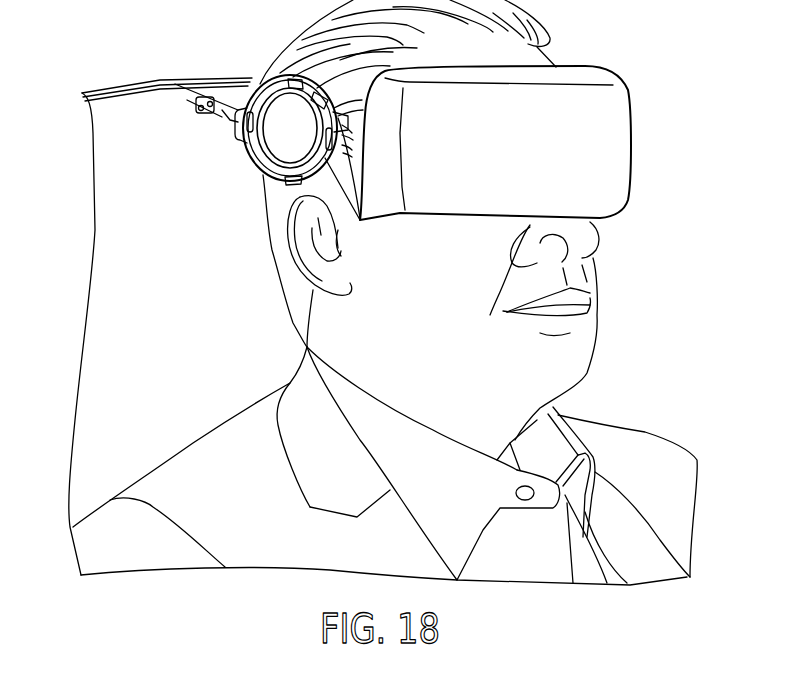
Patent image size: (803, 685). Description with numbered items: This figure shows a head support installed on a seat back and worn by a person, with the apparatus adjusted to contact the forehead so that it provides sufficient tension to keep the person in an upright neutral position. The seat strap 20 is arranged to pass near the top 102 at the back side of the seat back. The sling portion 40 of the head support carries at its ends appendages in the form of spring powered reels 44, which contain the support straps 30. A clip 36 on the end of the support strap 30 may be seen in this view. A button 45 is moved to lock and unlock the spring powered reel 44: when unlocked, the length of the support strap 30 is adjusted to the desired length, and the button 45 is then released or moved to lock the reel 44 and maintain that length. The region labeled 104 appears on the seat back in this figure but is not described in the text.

The wearable display device 20 is at (277, 120).
The housing ring 30 is at (236, 118).
The mounting strap clip 36 is at (140, 78).
The head-mounted goggles 40 is at (627, 155).
The lens 44 is at (280, 152).
The strap 45 is at (300, 184).
The display panel 102 is at (100, 82).
The display surface 104 is at (188, 321).